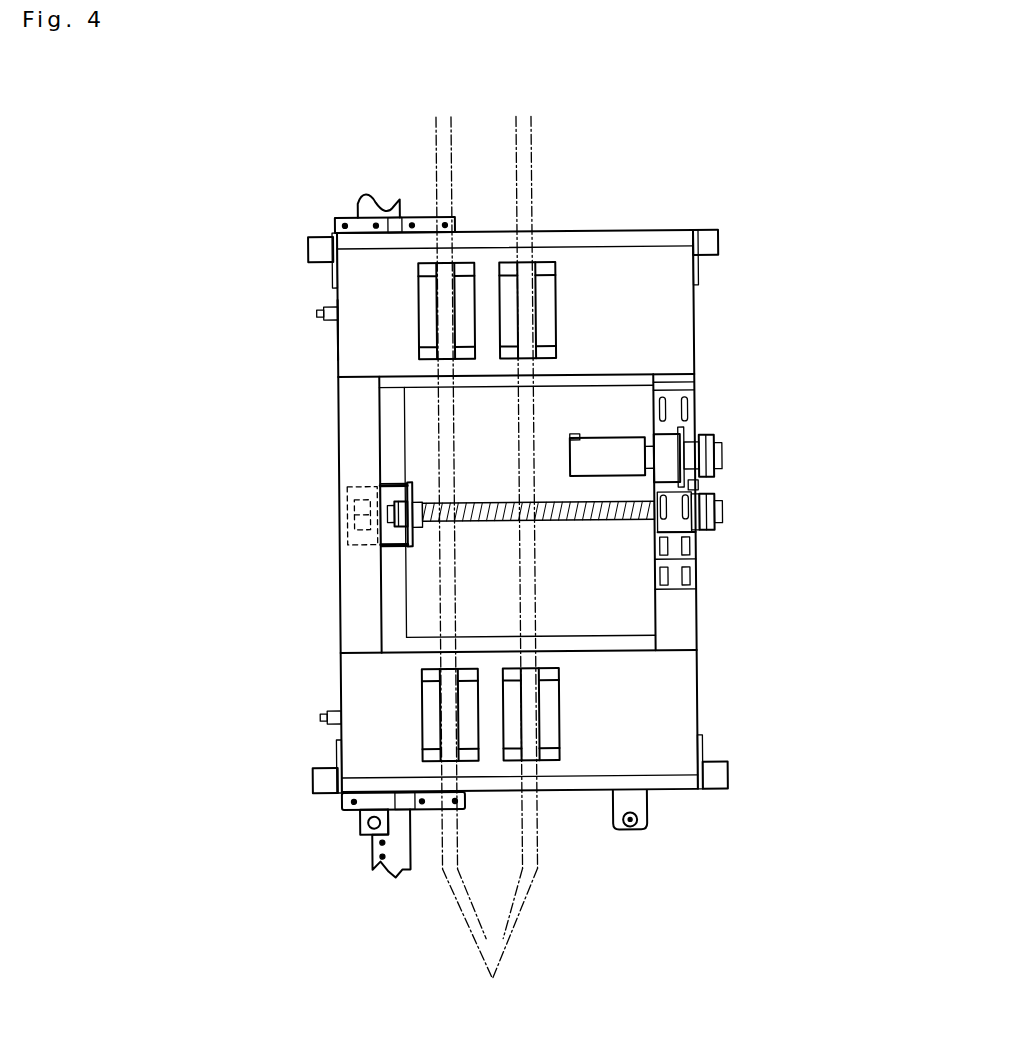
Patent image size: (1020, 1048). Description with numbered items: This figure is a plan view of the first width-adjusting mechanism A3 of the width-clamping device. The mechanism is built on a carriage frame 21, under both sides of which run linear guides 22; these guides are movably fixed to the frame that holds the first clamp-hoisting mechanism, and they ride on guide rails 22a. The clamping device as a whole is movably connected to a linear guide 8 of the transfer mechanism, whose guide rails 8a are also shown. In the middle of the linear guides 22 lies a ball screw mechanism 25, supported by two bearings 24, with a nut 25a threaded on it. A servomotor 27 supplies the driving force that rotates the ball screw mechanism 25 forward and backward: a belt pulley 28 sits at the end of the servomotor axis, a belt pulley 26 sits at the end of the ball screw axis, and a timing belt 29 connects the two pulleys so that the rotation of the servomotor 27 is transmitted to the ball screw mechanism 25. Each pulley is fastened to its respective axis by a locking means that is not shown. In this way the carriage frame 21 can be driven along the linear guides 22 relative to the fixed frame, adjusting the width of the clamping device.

The linear guide 8 is at (485, 272).
The guide rail 8a is at (487, 568).
The carriage frame 21 is at (618, 290).
The linear guide 22 is at (350, 207).
The guide rail 22a is at (304, 237).
The bearing 24 is at (340, 492).
The ball screw mechanism 25 is at (420, 547).
The nut 25a is at (410, 527).
The belt pulley 26 is at (715, 527).
The servomotor 27 is at (613, 455).
The belt pulley 28 is at (718, 452).
The timing belt 29 is at (706, 486).
The first width-adjusting mechanism A3 is at (328, 355).